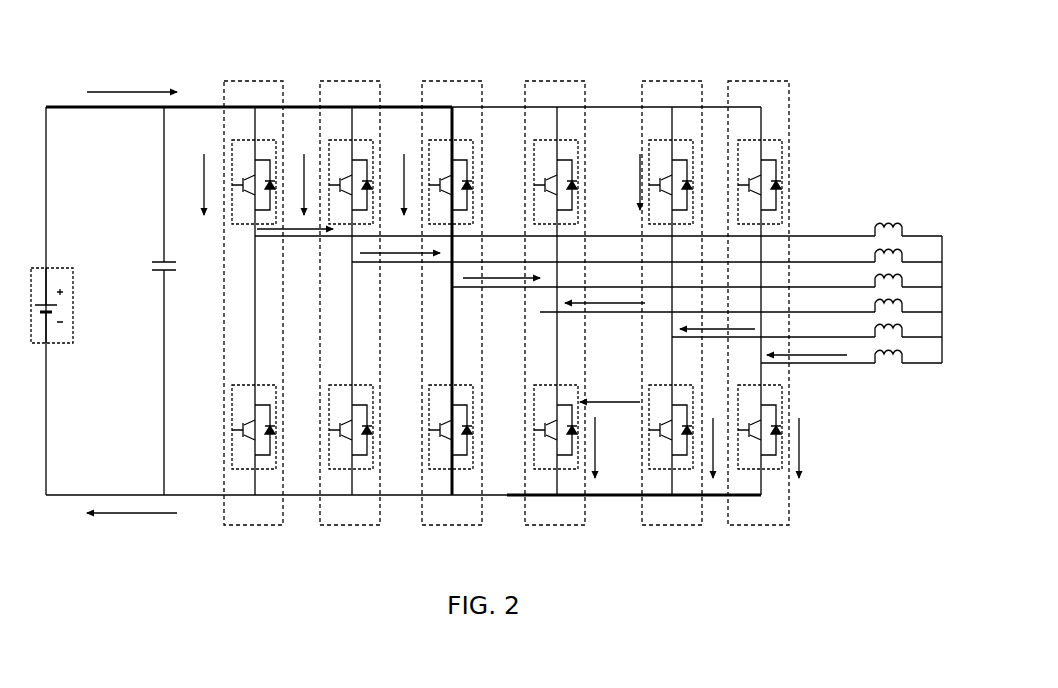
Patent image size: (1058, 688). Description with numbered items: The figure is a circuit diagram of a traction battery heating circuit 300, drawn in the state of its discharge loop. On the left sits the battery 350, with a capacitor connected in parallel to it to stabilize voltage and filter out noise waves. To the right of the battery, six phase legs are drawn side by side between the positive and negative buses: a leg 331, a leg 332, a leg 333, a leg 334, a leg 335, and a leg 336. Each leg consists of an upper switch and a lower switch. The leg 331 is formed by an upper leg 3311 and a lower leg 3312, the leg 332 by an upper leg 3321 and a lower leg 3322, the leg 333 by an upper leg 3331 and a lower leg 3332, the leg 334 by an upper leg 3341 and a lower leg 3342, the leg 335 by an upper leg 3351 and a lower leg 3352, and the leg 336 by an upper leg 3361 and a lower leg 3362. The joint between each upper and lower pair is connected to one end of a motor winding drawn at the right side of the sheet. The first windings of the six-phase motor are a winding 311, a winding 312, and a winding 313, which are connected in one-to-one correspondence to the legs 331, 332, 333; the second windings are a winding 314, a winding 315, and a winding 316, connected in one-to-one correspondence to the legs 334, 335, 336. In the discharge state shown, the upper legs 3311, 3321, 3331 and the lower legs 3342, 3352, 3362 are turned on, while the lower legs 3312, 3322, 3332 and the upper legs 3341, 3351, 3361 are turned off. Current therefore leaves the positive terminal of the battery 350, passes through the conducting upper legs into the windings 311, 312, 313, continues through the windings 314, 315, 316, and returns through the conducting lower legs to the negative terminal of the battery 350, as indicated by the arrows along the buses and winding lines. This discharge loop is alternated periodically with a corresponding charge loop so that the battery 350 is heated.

The power conversion circuit 300 is at (400, 279).
The battery 350 is at (52, 268).
The leg 331 is at (250, 80).
The leg 332 is at (350, 80).
The leg 333 is at (453, 80).
The leg 334 is at (555, 80).
The leg 335 is at (672, 80).
The leg 336 is at (761, 80).
The upper leg 3311 is at (243, 153).
The lower leg 3312 is at (243, 402).
The upper leg 3321 is at (342, 157).
The lower leg 3322 is at (336, 399).
The upper leg 3331 is at (442, 156).
The lower leg 3332 is at (440, 400).
The upper leg 3341 is at (546, 157).
The lower leg 3342 is at (545, 400).
The upper leg 3351 is at (660, 157).
The lower leg 3352 is at (662, 400).
The upper leg 3361 is at (773, 148).
The lower leg 3362 is at (773, 400).
The winding 311 is at (598, 225).
The winding 312 is at (647, 251).
The winding 313 is at (697, 276).
The winding 314 is at (741, 301).
The winding 315 is at (807, 326).
The winding 316 is at (851, 352).